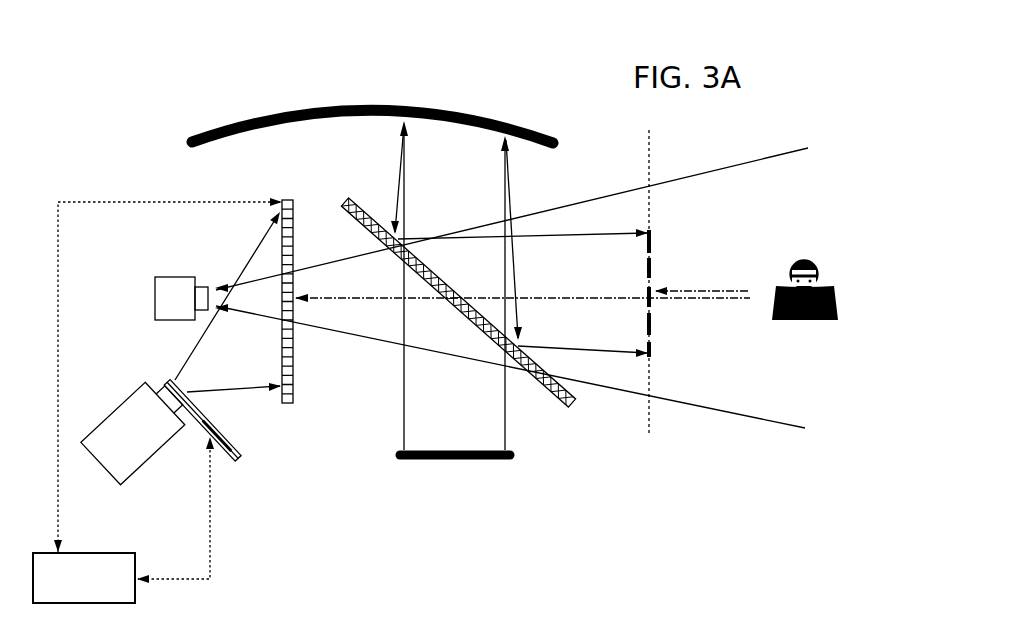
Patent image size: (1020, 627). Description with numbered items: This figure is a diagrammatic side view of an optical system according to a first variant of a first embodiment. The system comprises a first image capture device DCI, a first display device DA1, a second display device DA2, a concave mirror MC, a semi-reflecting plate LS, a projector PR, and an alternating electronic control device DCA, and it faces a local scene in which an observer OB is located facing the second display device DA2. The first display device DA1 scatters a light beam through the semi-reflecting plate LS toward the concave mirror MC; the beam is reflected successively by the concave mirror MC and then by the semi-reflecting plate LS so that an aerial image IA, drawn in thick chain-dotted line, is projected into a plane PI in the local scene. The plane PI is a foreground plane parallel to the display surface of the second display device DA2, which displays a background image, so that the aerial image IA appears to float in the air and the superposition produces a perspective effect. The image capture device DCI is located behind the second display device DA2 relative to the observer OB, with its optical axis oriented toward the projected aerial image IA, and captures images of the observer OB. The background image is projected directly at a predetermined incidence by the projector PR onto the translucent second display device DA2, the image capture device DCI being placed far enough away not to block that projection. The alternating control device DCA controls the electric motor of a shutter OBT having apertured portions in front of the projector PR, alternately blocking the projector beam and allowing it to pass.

The concave mirror MC is at (197, 132).
The second display device DA2 is at (295, 213).
The image capture device DCI is at (152, 298).
The projector PR is at (133, 478).
The shutter OBT is at (238, 450).
The alternating electronic control device DCA is at (105, 604).
The first display device DA1 is at (490, 460).
The semi-reflecting plate LS is at (553, 398).
The plane PI is at (650, 155).
The aerial image IA is at (655, 255).
The observer OB is at (805, 302).